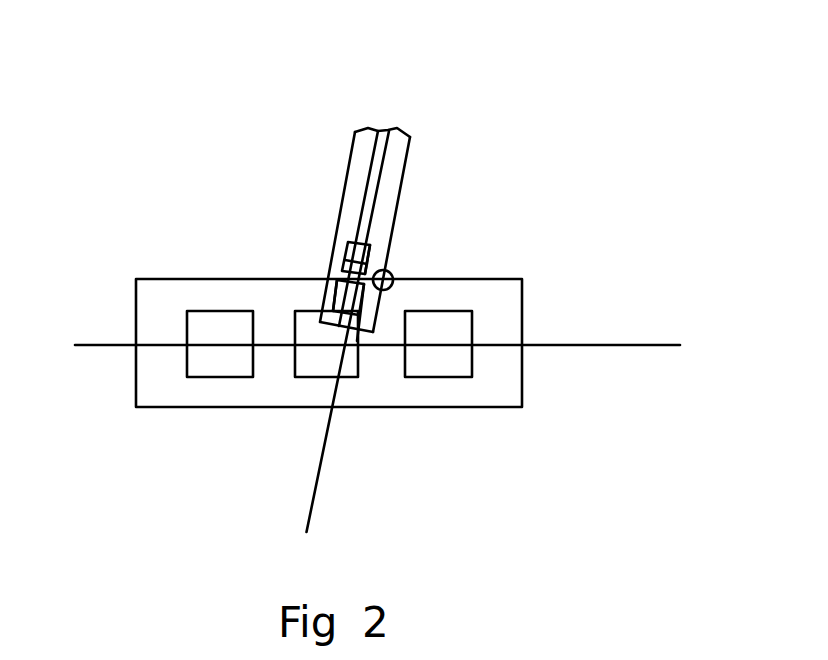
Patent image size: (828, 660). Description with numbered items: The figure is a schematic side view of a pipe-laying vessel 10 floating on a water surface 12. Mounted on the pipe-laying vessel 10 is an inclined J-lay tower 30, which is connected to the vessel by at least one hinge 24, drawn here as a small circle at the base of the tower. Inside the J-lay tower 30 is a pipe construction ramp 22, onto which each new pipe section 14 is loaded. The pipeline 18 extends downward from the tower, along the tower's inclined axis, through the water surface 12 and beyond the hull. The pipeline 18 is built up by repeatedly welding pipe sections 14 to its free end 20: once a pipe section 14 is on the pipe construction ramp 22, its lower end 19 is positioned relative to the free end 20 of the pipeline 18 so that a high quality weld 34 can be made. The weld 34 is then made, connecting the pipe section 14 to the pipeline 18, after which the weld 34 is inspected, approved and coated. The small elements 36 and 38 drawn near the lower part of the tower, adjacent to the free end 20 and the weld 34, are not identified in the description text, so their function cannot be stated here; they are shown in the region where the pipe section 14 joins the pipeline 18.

The pipe-laying vessel 10 is at (115, 227).
The water surface 12 is at (598, 344).
The pipe section 14 is at (373, 170).
The pipeline 18 is at (312, 506).
The lower end 19 is at (362, 243).
The free end 20 is at (356, 266).
The pipe construction ramp 22 is at (355, 132).
The hinge 24 is at (395, 273).
The J-lay tower 30 is at (410, 153).
The weld 34 is at (370, 243).
The holder 36 is at (338, 270).
The bracket 38 is at (336, 298).